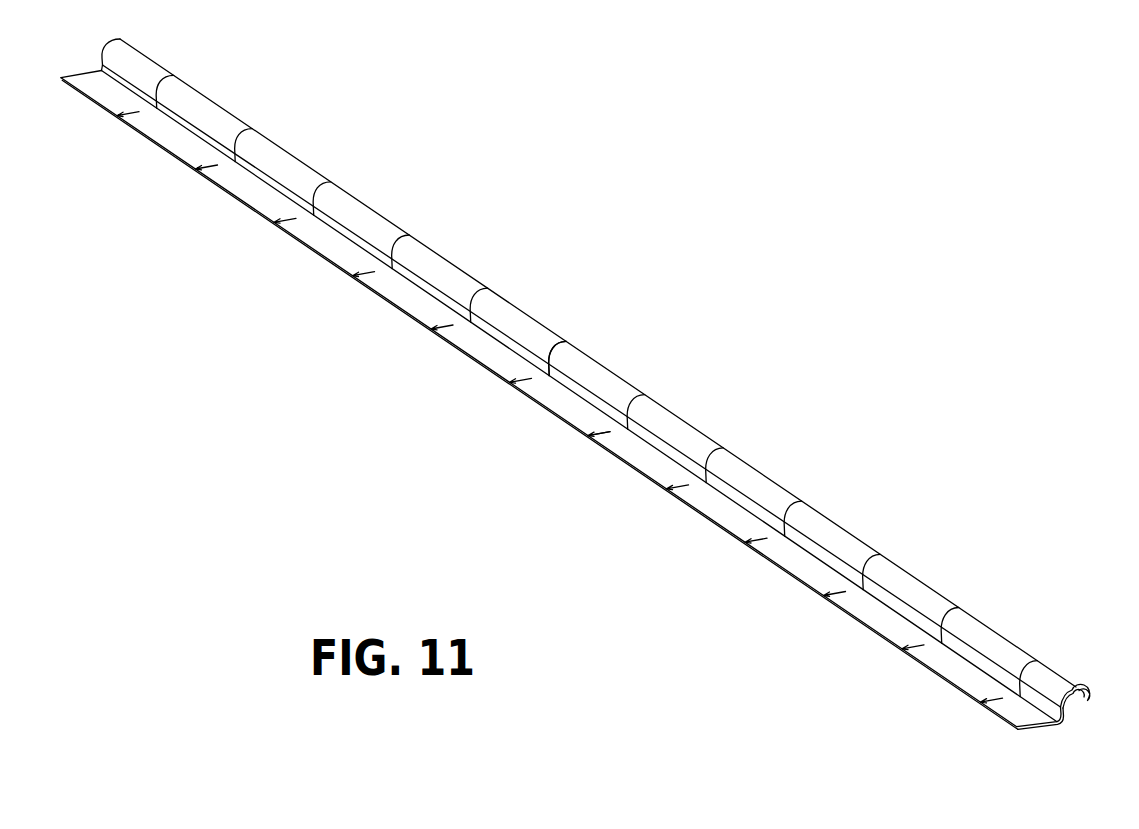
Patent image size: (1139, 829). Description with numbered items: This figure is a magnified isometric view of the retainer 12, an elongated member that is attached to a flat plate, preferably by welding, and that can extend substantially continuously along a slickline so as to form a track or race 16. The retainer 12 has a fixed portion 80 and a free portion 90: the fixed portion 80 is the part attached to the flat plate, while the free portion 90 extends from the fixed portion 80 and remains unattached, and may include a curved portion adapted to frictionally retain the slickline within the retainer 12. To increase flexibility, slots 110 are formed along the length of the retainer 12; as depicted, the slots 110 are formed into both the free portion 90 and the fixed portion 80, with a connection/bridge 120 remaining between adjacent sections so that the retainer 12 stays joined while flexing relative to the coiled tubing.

The retainer 12 is at (520, 310).
The track or race 16 is at (447, 260).
The fixed portion 80 is at (1003, 720).
The free portion 90 is at (1083, 689).
The slots 110 is at (584, 332).
The connection/bridge 120 is at (384, 272).